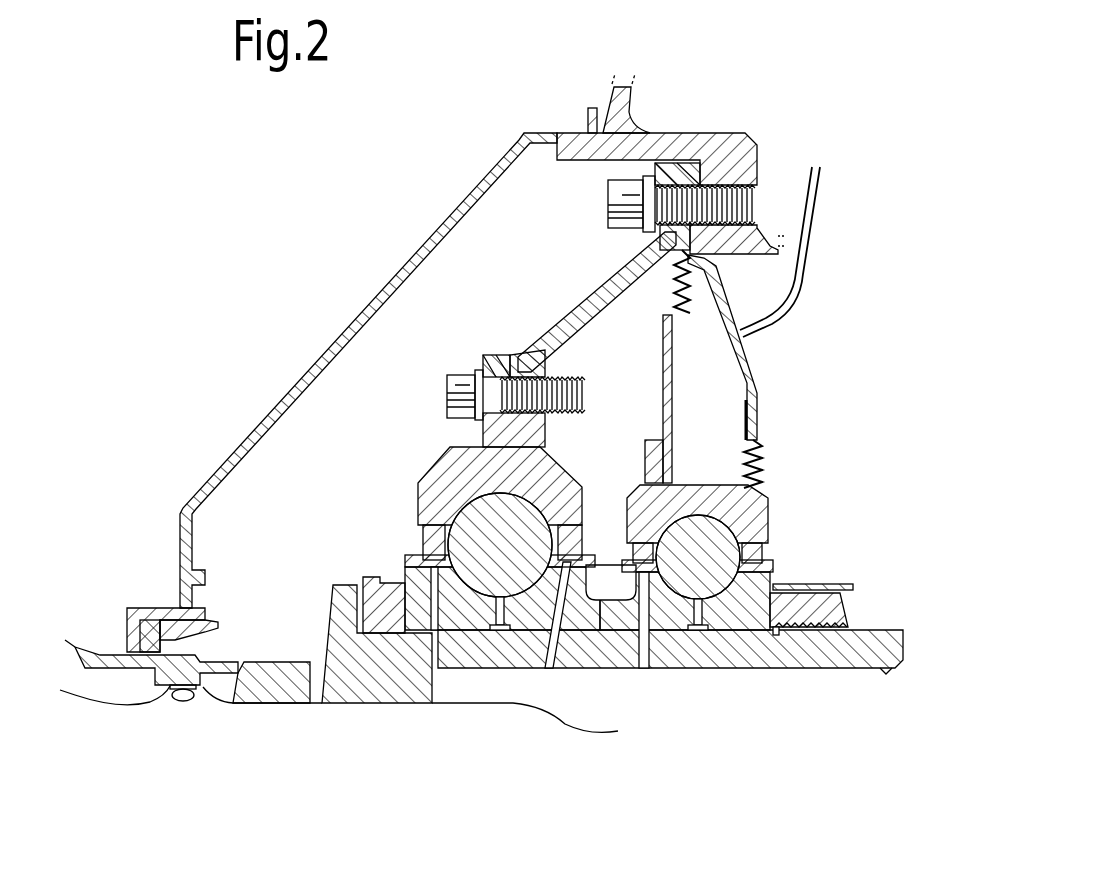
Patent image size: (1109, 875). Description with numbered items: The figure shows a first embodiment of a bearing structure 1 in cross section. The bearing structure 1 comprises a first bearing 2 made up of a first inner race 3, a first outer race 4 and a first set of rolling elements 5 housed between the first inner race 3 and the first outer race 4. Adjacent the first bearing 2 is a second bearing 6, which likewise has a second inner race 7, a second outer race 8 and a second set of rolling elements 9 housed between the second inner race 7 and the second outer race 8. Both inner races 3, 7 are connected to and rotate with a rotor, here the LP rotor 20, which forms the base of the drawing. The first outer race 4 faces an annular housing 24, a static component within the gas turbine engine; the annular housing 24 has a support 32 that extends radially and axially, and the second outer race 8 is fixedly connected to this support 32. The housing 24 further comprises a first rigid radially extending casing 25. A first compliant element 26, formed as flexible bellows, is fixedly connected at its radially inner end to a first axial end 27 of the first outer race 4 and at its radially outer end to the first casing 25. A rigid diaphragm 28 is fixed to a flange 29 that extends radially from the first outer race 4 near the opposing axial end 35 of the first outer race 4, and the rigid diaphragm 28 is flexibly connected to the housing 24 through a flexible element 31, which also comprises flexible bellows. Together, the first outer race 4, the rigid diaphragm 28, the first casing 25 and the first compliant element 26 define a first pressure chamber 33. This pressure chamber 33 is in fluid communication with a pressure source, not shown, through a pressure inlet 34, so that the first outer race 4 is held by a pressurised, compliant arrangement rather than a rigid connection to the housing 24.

The bearing structure 1 is at (850, 178).
The first bearing 2 is at (800, 488).
The first inner race 3 is at (760, 610).
The first outer race 4 is at (743, 510).
The first set of rolling elements 5 is at (704, 571).
The second bearing 6 is at (405, 478).
The second inner race 7 is at (390, 613).
The second outer race 8 is at (453, 478).
The second set of rolling elements 9 is at (503, 559).
The LP rotor 20 is at (517, 655).
The annular housing 24 is at (733, 148).
The first rigid radially extending casing 25 is at (748, 363).
The first compliant element 26 is at (747, 485).
The first axial end 27 is at (770, 530).
The rigid diaphragm 28 is at (667, 365).
The flange 29 is at (652, 458).
The flexible element 31 is at (672, 286).
The support 32 is at (597, 302).
The first pressure chamber 33 is at (716, 400).
The pressure inlet 34 is at (802, 296).
The opposing axial end 35 is at (628, 513).